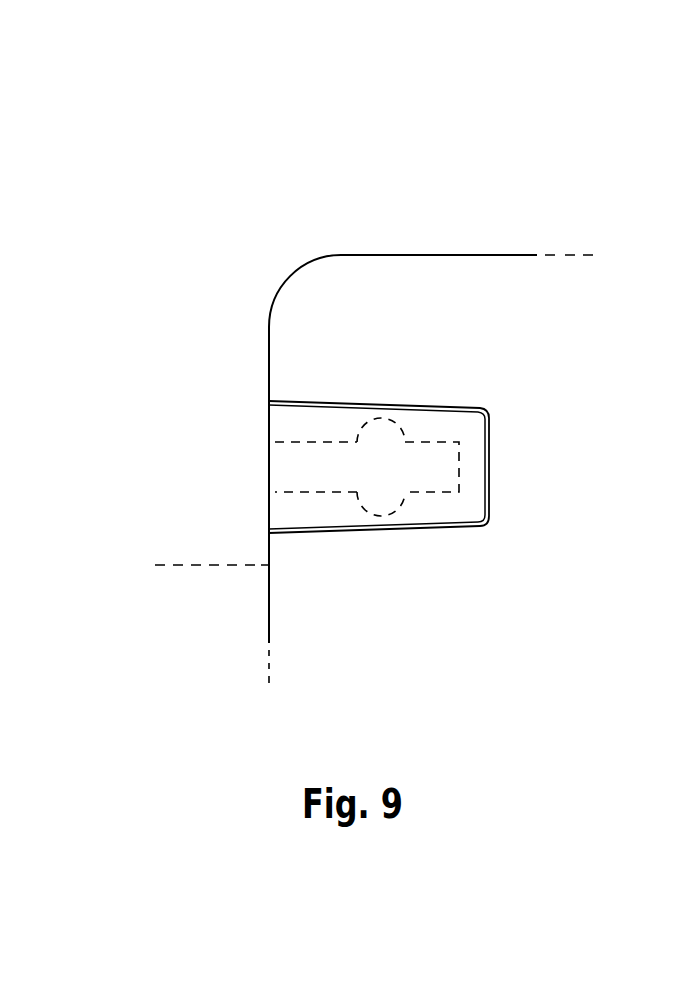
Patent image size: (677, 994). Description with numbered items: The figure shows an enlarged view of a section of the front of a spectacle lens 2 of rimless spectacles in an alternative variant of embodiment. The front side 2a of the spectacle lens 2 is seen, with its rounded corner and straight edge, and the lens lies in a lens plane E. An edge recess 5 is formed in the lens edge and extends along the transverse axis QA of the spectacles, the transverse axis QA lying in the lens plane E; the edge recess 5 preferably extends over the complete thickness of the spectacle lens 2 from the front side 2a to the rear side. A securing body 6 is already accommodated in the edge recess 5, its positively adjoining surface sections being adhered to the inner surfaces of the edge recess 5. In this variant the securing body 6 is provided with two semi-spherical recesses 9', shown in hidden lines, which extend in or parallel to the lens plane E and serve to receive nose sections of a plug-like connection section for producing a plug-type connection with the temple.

The spectacle lens 2 is at (466, 256).
The front side 2a is at (383, 336).
The edge recess 5 is at (507, 534).
The securing body 6 is at (284, 469).
The semi-spherical recess 9' is at (367, 476).
The lens plane E is at (198, 234).
The transverse axis QA is at (181, 570).